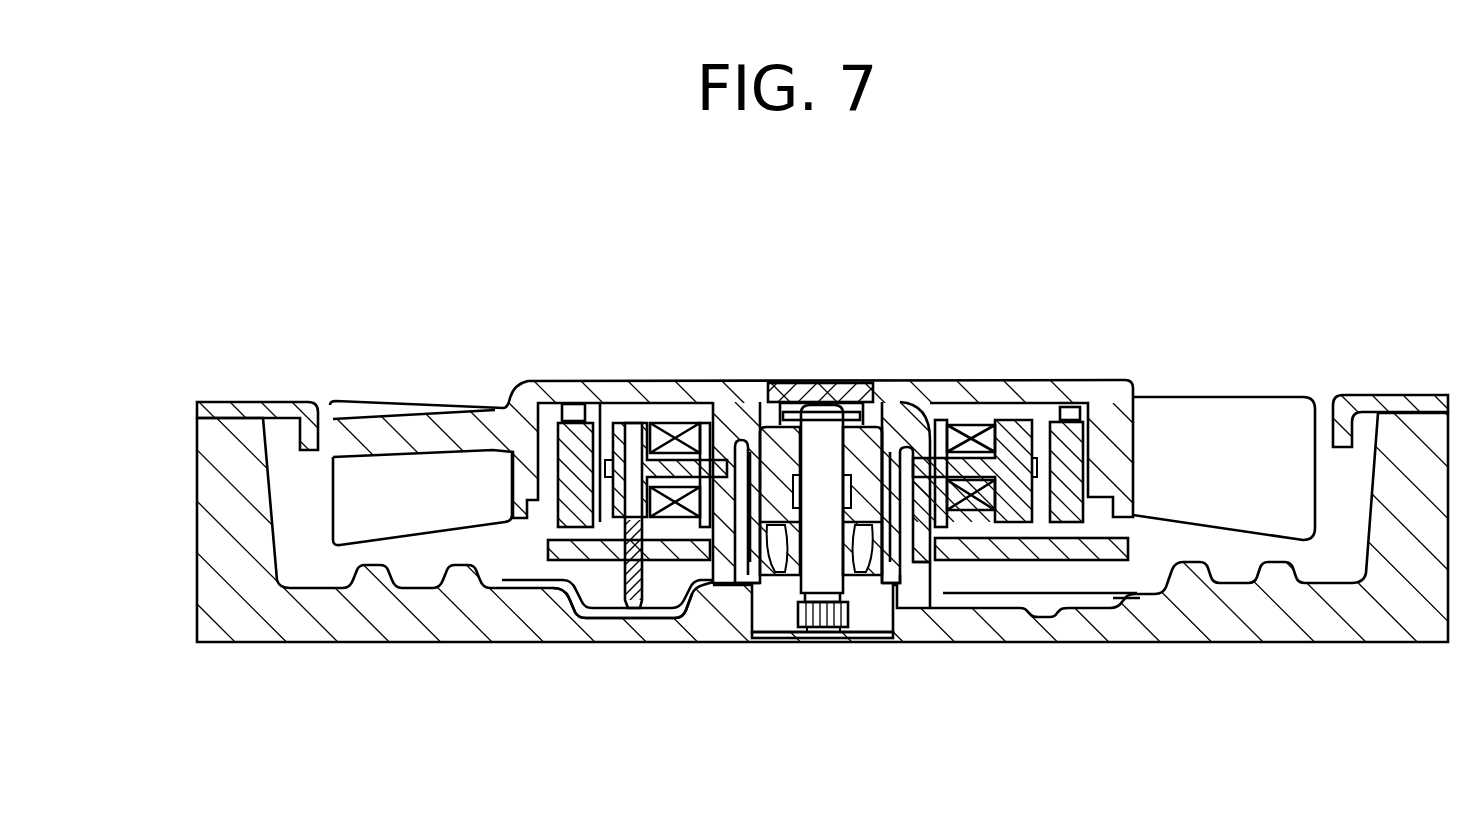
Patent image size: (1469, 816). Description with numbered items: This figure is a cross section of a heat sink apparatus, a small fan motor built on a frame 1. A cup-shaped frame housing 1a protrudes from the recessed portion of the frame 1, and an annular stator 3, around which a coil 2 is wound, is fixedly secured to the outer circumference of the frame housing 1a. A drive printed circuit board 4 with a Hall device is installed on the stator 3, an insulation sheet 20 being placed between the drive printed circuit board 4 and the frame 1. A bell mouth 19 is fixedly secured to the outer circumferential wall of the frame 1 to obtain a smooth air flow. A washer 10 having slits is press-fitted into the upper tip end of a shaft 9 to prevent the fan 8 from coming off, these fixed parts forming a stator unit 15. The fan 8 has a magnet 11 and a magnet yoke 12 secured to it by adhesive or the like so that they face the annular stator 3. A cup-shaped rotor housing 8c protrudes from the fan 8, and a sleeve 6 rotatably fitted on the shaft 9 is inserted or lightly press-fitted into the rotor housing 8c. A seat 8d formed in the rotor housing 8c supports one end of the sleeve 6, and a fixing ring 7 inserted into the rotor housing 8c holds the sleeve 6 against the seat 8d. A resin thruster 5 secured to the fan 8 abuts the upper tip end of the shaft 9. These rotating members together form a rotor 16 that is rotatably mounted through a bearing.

The frame 1 is at (320, 630).
The frame housing 1a is at (728, 410).
The coil 2 is at (977, 427).
The stator 3 is at (687, 472).
The drive printed circuit board 4 is at (562, 558).
The thruster 5 is at (852, 427).
The sleeve 6 is at (852, 620).
The fixing ring 7 is at (775, 637).
The fan 8 is at (455, 425).
The rotor housing 8c is at (745, 560).
The seat 8d is at (880, 415).
The shaft 9 is at (820, 590).
The washer 10 is at (795, 412).
The magnet 11 is at (1097, 425).
The magnet yoke 12 is at (567, 404).
The stator unit 15 is at (598, 615).
The rotor 16 is at (758, 383).
The bell mouth 19 is at (1392, 397).
The insulation sheet 20 is at (1042, 596).